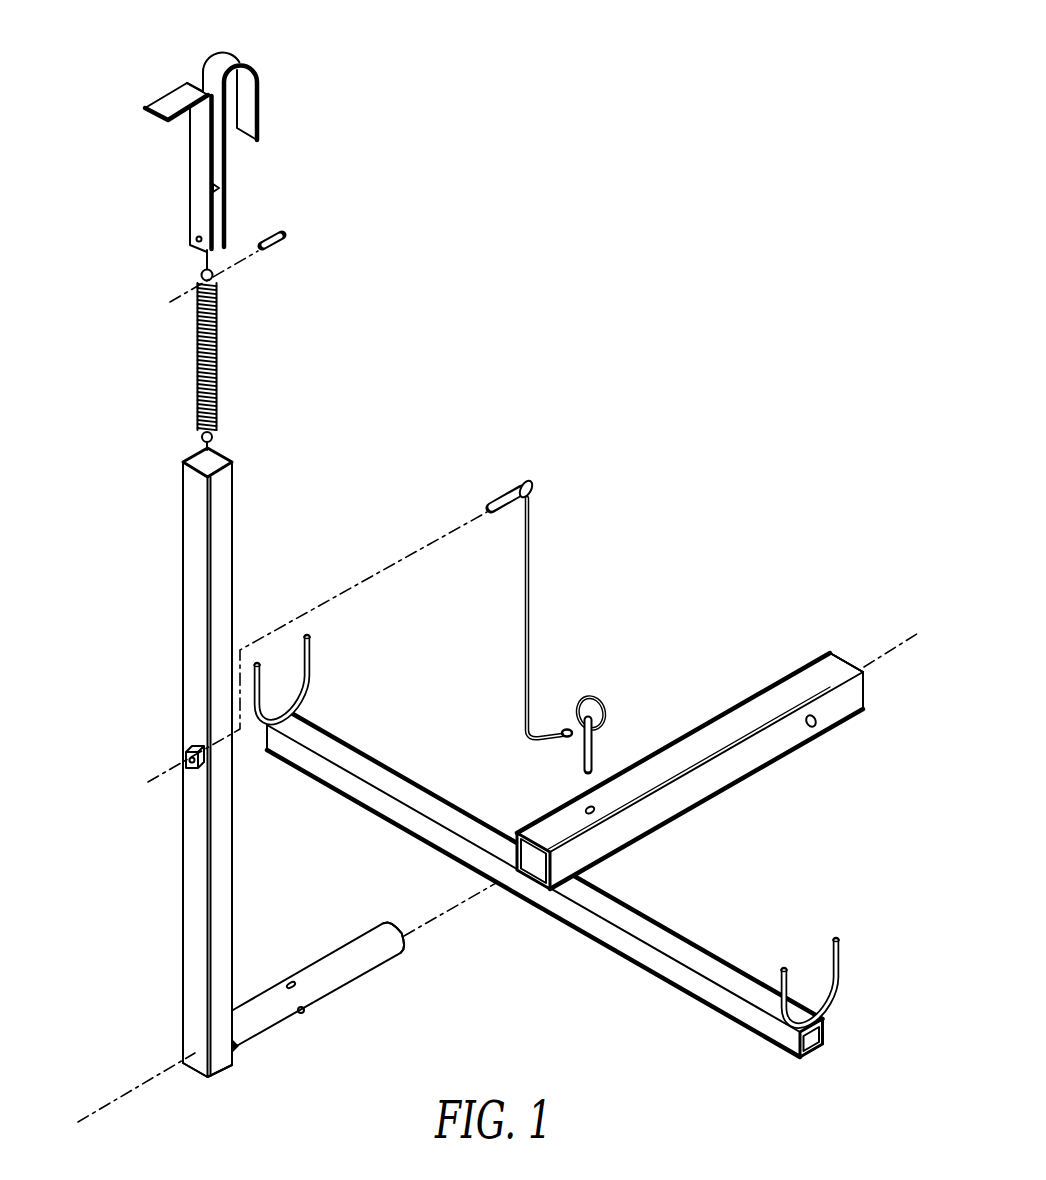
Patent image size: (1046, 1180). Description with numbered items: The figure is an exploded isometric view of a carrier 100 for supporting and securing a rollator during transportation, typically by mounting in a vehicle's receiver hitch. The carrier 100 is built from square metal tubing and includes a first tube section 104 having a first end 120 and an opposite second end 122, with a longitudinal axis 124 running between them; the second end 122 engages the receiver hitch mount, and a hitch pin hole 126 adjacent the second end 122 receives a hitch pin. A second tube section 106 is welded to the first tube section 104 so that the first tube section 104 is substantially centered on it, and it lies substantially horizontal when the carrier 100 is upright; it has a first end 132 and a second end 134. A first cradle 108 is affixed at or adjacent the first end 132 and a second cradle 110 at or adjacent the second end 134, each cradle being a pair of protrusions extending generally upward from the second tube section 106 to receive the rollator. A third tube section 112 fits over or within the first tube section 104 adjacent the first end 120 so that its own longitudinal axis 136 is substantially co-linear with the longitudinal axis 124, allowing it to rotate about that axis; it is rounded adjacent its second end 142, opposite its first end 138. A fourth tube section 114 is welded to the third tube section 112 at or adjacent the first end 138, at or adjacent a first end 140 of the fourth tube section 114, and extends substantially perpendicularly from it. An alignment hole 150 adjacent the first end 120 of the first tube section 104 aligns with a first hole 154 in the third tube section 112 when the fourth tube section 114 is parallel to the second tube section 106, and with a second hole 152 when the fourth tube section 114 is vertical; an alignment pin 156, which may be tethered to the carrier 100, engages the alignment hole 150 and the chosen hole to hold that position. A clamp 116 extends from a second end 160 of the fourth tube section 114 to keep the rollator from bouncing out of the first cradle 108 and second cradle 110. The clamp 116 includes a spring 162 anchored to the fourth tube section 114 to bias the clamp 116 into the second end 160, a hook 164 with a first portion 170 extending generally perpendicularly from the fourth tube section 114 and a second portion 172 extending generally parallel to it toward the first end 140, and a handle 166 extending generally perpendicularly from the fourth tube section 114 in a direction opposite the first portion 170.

The carrier 100 is at (693, 326).
The first tube section 104 is at (700, 724).
The second tube section 106 is at (563, 935).
The first cradle 108 is at (310, 668).
The second cradle 110 is at (840, 965).
The third tube section 112 is at (348, 977).
The fourth tube section 114 is at (183, 601).
The clamp 116 is at (259, 231).
The first end of first tube section 120 is at (518, 876).
The second end of first tube section 122 is at (840, 659).
The longitudinal axis of first tube section 124 is at (877, 668).
The hitch pin hole 126 is at (816, 726).
The first end of second tube section 132 is at (267, 742).
The second end of second tube section 134 is at (814, 1060).
The longitudinal axis of third tube section 136 is at (125, 1094).
The first end of third tube section 138 is at (240, 1047).
The first end of fourth tube section 140 is at (207, 1080).
The second end of third tube section 142 is at (405, 942).
The alignment hole 150 is at (594, 811).
The second hole 152 is at (291, 981).
The first hole 154 is at (304, 1012).
The alignment pin 156 is at (582, 752).
The second end of fourth tube section 160 is at (210, 470).
The spring 162 is at (215, 350).
The hook 164 is at (259, 90).
The handle 166 is at (173, 103).
The first portion of hook 170 is at (238, 58).
The second portion of hook 172 is at (260, 128).